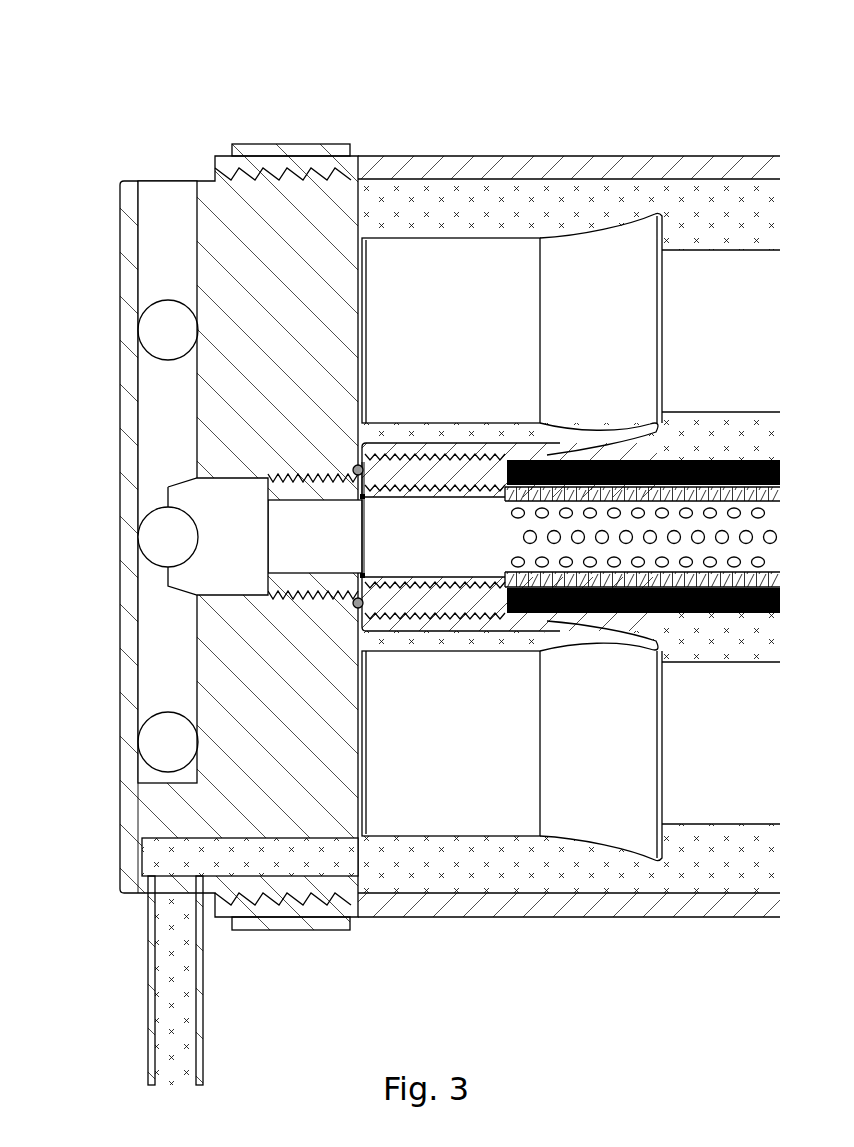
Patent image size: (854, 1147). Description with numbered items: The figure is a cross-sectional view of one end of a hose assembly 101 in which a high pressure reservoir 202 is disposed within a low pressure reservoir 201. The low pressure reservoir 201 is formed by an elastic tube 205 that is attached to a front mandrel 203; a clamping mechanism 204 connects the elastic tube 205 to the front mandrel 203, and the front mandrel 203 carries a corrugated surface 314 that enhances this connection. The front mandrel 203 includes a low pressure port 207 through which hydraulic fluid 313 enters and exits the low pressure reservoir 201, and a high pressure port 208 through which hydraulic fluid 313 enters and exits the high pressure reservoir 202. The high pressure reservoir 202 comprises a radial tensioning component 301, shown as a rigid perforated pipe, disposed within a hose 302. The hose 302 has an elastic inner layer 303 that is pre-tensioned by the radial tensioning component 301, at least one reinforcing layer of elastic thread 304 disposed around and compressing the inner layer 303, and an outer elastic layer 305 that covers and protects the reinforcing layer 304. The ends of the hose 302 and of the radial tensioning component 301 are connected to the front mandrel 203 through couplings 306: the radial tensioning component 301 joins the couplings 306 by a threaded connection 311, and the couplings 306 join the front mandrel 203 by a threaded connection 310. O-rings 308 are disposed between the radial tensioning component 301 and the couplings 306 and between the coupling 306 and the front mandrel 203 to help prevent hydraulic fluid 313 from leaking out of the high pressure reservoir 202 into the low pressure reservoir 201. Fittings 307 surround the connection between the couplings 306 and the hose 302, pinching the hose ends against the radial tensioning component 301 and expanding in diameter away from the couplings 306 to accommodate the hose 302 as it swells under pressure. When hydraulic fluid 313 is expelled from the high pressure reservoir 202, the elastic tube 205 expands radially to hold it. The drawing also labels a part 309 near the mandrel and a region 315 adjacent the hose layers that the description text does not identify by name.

The hose assembly 101 is at (108, 60).
The low pressure reservoir 201 is at (711, 130).
The high pressure reservoir 202 is at (556, 225).
The front mandrel 203 is at (145, 805).
The clamping mechanism 204 is at (289, 145).
The elastic tube 205 is at (441, 165).
The low pressure port 207 is at (175, 1025).
The high pressure port 208 is at (164, 195).
The radial tensioning component 301 is at (740, 550).
The hose 302 is at (742, 340).
The elastic inner layer 303 is at (752, 487).
The reinforcing layer of elastic thread 304 is at (755, 606).
The elastic layer 305 is at (730, 615).
The couplings 306 is at (481, 478).
The fittings 307 is at (401, 452).
The o-rings 308 is at (355, 478).
The retainer block 309 is at (205, 505).
The threaded connection 310 is at (330, 600).
The threaded connection 311 is at (481, 590).
The hydraulic fluid 313 is at (548, 870).
The corrugated surface 314 is at (277, 905).
The upper foam layer 315 is at (760, 462).